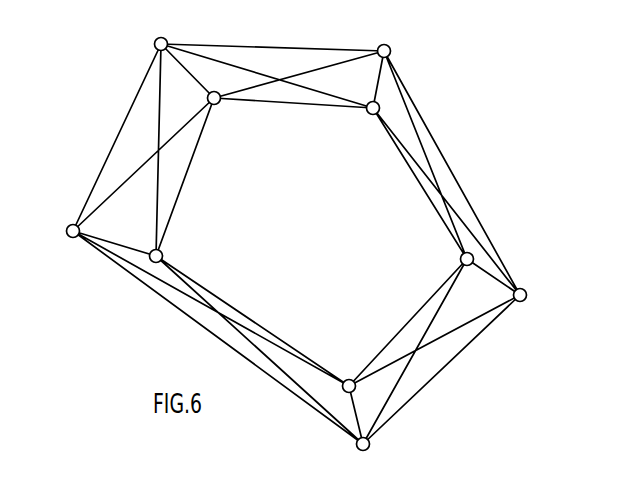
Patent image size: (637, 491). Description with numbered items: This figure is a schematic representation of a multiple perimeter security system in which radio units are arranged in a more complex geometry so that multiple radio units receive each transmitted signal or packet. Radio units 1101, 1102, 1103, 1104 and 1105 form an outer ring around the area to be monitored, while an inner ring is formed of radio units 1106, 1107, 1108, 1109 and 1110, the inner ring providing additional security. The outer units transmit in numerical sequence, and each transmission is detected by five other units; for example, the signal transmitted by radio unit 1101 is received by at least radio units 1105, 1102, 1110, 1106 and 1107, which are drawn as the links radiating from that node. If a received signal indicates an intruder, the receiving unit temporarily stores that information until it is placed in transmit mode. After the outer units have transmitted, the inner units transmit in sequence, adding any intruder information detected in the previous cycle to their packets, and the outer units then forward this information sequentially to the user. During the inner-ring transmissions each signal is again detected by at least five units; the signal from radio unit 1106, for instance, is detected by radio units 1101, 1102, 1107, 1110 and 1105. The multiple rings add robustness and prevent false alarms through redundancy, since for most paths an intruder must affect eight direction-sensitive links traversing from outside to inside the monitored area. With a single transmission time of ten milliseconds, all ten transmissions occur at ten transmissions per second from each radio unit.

The radio unit 1101 is at (154, 43).
The radio unit 1102 is at (390, 45).
The radio unit 1103 is at (527, 296).
The radio unit 1104 is at (363, 451).
The radio unit 1105 is at (66, 231).
The radio unit 1106 is at (219, 103).
The radio unit 1107 is at (368, 114).
The radio unit 1108 is at (460, 261).
The radio unit 1109 is at (349, 379).
The radio unit 1110 is at (163, 254).